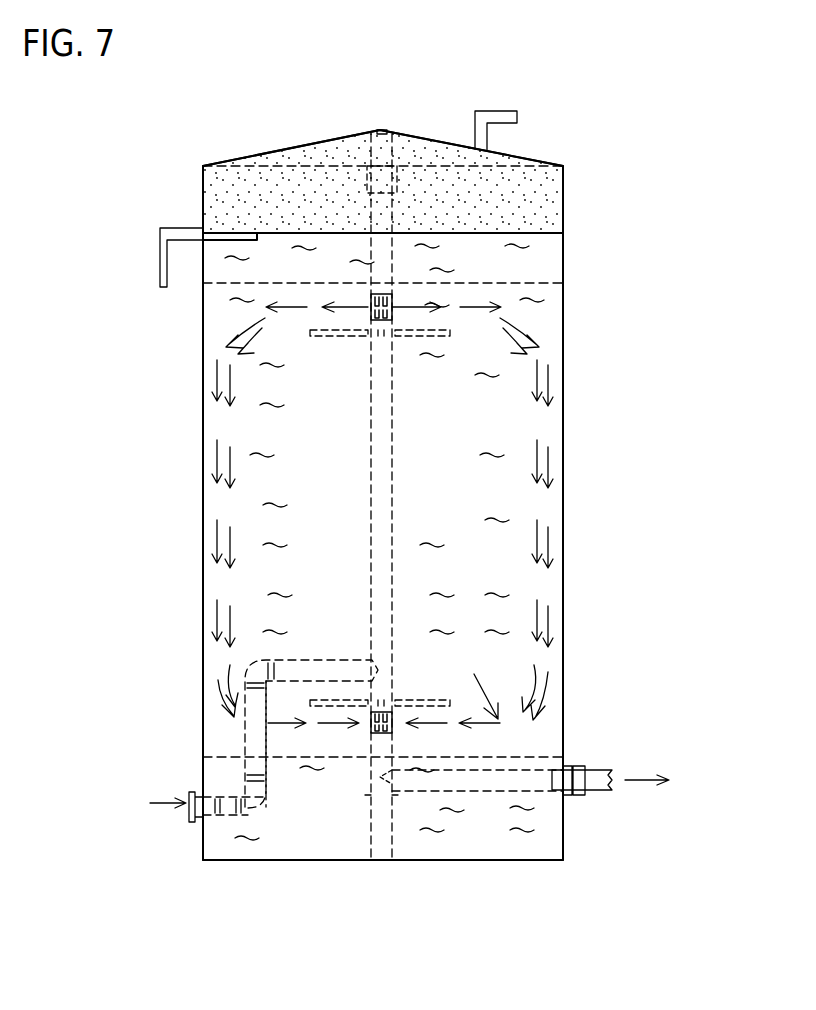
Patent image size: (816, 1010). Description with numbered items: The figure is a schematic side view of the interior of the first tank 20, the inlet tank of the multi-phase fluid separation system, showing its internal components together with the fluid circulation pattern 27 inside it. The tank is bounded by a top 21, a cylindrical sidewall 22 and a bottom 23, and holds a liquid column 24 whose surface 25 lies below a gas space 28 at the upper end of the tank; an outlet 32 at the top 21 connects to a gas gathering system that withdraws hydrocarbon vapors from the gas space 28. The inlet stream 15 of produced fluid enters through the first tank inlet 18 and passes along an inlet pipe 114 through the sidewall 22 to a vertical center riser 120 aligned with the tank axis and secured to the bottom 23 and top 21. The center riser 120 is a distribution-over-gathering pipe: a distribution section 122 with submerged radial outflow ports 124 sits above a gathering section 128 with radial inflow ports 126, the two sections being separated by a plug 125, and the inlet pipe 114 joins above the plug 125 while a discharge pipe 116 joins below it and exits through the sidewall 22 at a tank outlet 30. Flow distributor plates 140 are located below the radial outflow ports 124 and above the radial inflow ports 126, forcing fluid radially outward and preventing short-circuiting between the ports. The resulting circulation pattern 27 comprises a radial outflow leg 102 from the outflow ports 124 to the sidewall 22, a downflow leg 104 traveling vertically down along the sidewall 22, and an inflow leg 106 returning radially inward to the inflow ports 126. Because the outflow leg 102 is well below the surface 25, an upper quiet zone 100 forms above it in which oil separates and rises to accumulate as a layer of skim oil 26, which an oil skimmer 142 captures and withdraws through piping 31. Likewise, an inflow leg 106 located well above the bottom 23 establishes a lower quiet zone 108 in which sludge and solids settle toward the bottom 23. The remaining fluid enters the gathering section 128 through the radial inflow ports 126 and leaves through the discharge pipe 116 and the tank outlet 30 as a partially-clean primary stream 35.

The first tank 20 is at (611, 124).
The top 21 is at (335, 138).
The sidewall 22 is at (565, 508).
The bottom 23 is at (445, 862).
The liquid column 24 is at (452, 467).
The surface 25 is at (533, 233).
The skim oil 26 is at (294, 216).
The fluid circulation pattern 27 is at (540, 458).
The gas space 28 is at (470, 203).
The outlet port 30 is at (574, 756).
The piping 31 is at (162, 252).
The outlet 32 is at (497, 111).
The primary stream 35 is at (637, 782).
The inlet stream 15 is at (178, 790).
The first tank inlet 18 is at (198, 836).
The upper quiet zone 100 is at (552, 266).
The radial outflow leg 102 is at (474, 290).
The downflow leg 104 is at (208, 459).
The inflow leg 106 is at (500, 686).
The lower quiet zone 108 is at (299, 818).
The inlet pipe 114 is at (255, 738).
The discharge pipe 116 is at (480, 780).
The center riser 120 is at (350, 543).
The distribution section 122 is at (375, 490).
The radial outflow ports 124 is at (371, 310).
The plug 125 is at (383, 690).
The radial inflow ports 126 is at (392, 723).
The gathering section 128 is at (383, 765).
The flow distributor plates 140 is at (433, 340).
The oil skimmer 142 is at (213, 225).